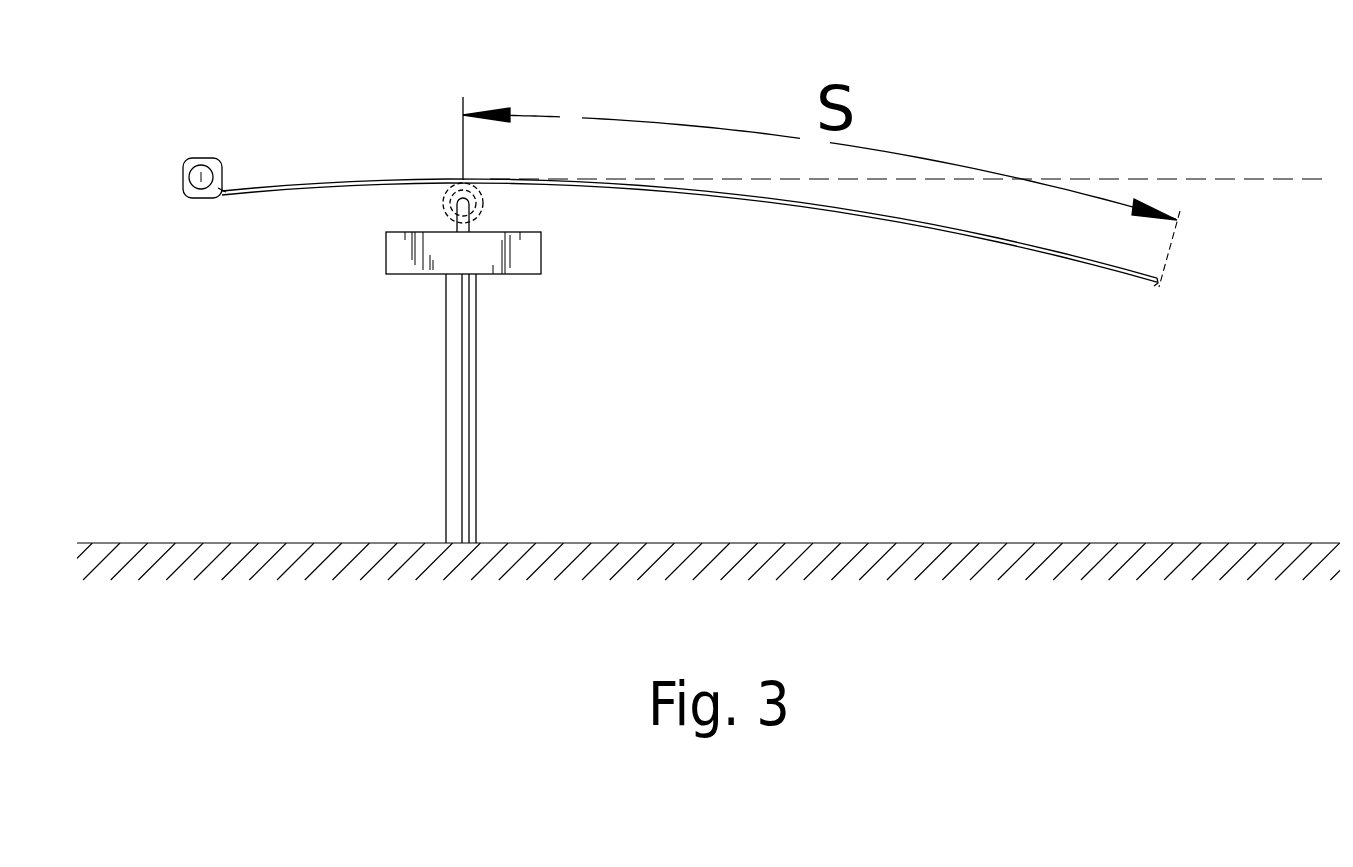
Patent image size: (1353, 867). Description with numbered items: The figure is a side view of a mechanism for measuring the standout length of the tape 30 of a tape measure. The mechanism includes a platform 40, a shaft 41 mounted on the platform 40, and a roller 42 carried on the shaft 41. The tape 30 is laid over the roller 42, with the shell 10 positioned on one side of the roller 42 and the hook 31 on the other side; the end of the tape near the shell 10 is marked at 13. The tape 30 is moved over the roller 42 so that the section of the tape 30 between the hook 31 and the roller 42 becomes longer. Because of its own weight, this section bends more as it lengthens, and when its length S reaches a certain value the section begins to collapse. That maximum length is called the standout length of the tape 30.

The shell 10 is at (198, 174).
The attachment end 13 is at (225, 190).
The tape 30 is at (822, 208).
The hook 31 is at (1160, 287).
The platform 40 is at (515, 262).
The shaft 41 is at (473, 203).
The roller 42 is at (447, 205).